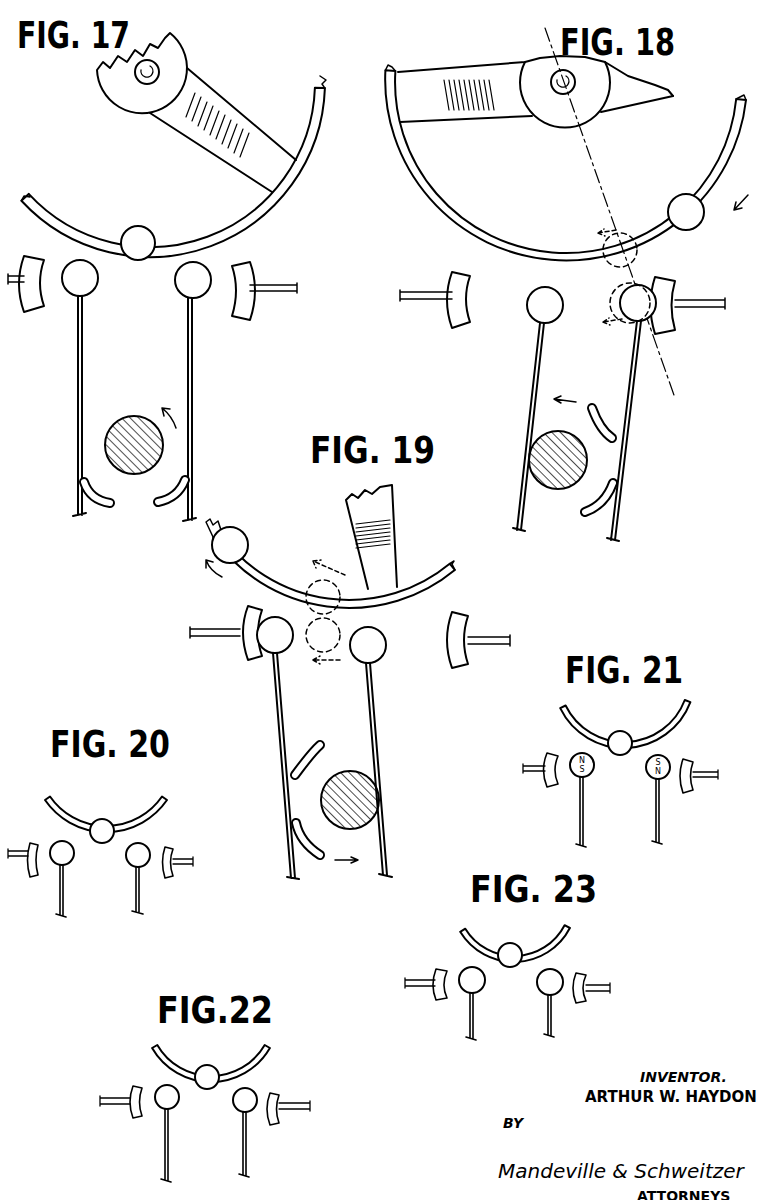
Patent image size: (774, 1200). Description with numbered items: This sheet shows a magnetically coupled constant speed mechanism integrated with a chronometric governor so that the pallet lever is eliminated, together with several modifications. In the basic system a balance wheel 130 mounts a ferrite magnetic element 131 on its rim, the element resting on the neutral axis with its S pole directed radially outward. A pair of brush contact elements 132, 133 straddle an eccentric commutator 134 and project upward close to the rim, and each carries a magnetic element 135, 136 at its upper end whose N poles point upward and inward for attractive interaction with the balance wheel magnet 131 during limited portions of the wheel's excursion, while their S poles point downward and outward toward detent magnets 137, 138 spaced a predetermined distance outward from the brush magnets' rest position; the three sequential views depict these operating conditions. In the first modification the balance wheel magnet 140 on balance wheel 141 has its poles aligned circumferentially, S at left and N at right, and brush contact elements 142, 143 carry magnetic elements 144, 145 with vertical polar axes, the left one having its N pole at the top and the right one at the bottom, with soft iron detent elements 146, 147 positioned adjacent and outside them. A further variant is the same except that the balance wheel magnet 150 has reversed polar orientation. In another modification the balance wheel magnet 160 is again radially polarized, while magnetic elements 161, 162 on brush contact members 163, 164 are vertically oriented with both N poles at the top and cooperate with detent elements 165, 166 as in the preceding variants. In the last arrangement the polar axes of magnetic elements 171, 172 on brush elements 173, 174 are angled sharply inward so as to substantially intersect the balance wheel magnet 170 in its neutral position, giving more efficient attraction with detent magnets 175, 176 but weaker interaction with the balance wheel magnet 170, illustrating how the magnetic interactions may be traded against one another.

In FIG. 17, the balance wheel 130 is at (212, 100).
In FIG. 18, the balance wheel 130 is at (444, 114).
In FIG. 19, the balance wheel 130 is at (397, 572).
In FIG. 17, the ferrite magnetic element 131 is at (147, 232).
In FIG. 18, the ferrite magnetic element 131 is at (676, 198).
In FIG. 19, the ferrite magnetic element 131 is at (236, 528).
In FIG. 17, the brush contact element 132 is at (77, 370).
In FIG. 18, the brush contact element 132 is at (534, 394).
In FIG. 19, the brush contact element 132 is at (279, 732).
In FIG. 17, the brush contact element 133 is at (193, 380).
In FIG. 18, the brush contact element 133 is at (626, 408).
In FIG. 19, the brush contact element 133 is at (381, 748).
In FIG. 17, the eccentric commutator 134 is at (134, 418).
In FIG. 18, the eccentric commutator 134 is at (541, 446).
In FIG. 19, the eccentric commutator 134 is at (370, 797).
In FIG. 17, the brush element magnet 135 is at (84, 296).
In FIG. 18, the brush element magnet 135 is at (527, 311).
In FIG. 19, the brush element magnet 135 is at (265, 652).
In FIG. 17, the brush element magnet 136 is at (176, 283).
In FIG. 18, the brush element magnet 136 is at (621, 303).
In FIG. 19, the brush element magnet 136 is at (363, 664).
In FIG. 17, the detent magnet 137 is at (24, 318).
In FIG. 18, the detent magnet 137 is at (452, 316).
In FIG. 19, the detent magnet 137 is at (242, 614).
In FIG. 17, the detent magnet 138 is at (248, 310).
In FIG. 18, the detent magnet 138 is at (676, 318).
In FIG. 19, the detent magnet 138 is at (463, 620).
In FIG. 20, the balance wheel magnet 140 is at (106, 818).
In FIG. 20, the balance wheel 141 is at (160, 803).
In FIG. 20, the brush contact element 142 is at (64, 910).
In FIG. 20, the brush contact element 143 is at (140, 903).
In FIG. 20, the magnetic element 144 is at (56, 842).
In FIG. 20, the magnetic element 145 is at (147, 845).
In FIG. 20, the detent element 146 is at (32, 880).
In FIG. 20, the detent element 147 is at (177, 870).
In FIG. 21, the balance wheel magnet 150 is at (616, 716).
In FIG. 22, the balance wheel magnet 160 is at (210, 1065).
In FIG. 22, the magnetic element 161 is at (160, 1085).
In FIG. 22, the magnetic element 162 is at (252, 1088).
In FIG. 22, the brush contact member 163 is at (163, 1140).
In FIG. 22, the brush contact member 164 is at (248, 1162).
In FIG. 22, the detent element 165 is at (130, 1113).
In FIG. 22, the detent element 166 is at (279, 1118).
In FIG. 23, the balance wheel magnet 170 is at (515, 926).
In FIG. 23, the magnetic element 171 is at (463, 968).
In FIG. 23, the magnetic element 172 is at (558, 970).
In FIG. 23, the brush element 173 is at (468, 1015).
In FIG. 23, the brush element 174 is at (552, 1020).
In FIG. 23, the detent magnet 175 is at (435, 997).
In FIG. 23, the detent magnet 176 is at (585, 999).